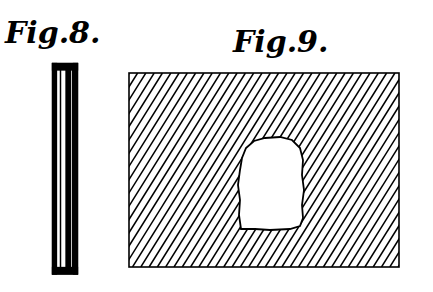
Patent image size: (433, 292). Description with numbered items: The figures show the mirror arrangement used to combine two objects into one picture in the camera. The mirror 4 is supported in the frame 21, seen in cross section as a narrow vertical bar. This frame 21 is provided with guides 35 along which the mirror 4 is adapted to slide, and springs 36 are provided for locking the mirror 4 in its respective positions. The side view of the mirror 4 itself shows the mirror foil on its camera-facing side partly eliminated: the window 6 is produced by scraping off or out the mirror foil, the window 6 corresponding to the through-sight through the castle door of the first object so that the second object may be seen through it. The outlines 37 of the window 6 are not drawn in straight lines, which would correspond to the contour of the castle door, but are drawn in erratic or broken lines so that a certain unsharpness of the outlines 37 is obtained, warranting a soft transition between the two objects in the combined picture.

In FIG. 8, the mirror 4 is at (55, 150).
In FIG. 9, the mirror 4 is at (133, 182).
In FIG. 8, the frame 21 is at (78, 217).
In FIG. 8, the guides 35 is at (53, 67).
In FIG. 8, the springs 36 is at (79, 68).
In FIG. 9, the window 6 is at (271, 183).
In FIG. 9, the outlines 37 is at (240, 164).